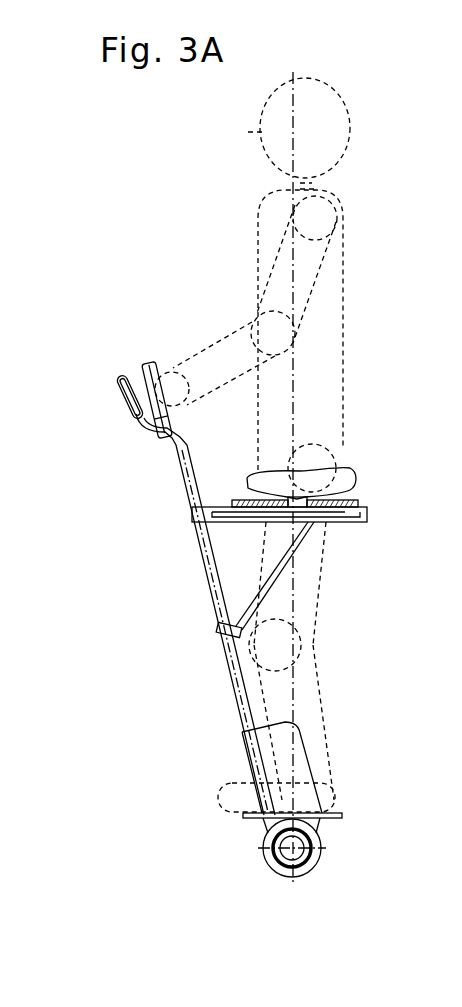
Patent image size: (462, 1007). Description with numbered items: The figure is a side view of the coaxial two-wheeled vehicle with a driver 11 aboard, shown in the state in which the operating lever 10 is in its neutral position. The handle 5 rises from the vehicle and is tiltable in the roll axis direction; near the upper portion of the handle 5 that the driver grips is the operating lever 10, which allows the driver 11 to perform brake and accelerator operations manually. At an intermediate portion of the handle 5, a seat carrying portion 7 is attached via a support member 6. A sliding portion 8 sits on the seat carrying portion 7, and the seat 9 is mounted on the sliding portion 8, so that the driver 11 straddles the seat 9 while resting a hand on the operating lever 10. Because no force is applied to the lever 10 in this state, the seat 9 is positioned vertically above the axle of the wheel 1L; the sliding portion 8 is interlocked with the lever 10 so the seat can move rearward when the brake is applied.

The wheel 1L is at (318, 860).
The handle 5 is at (215, 588).
The support member 6 is at (294, 551).
The seat carrying portion 7 is at (240, 525).
The sliding portion 8 is at (340, 520).
The seat 9 is at (348, 467).
The operating lever 10 is at (123, 410).
The driver 11 is at (343, 277).